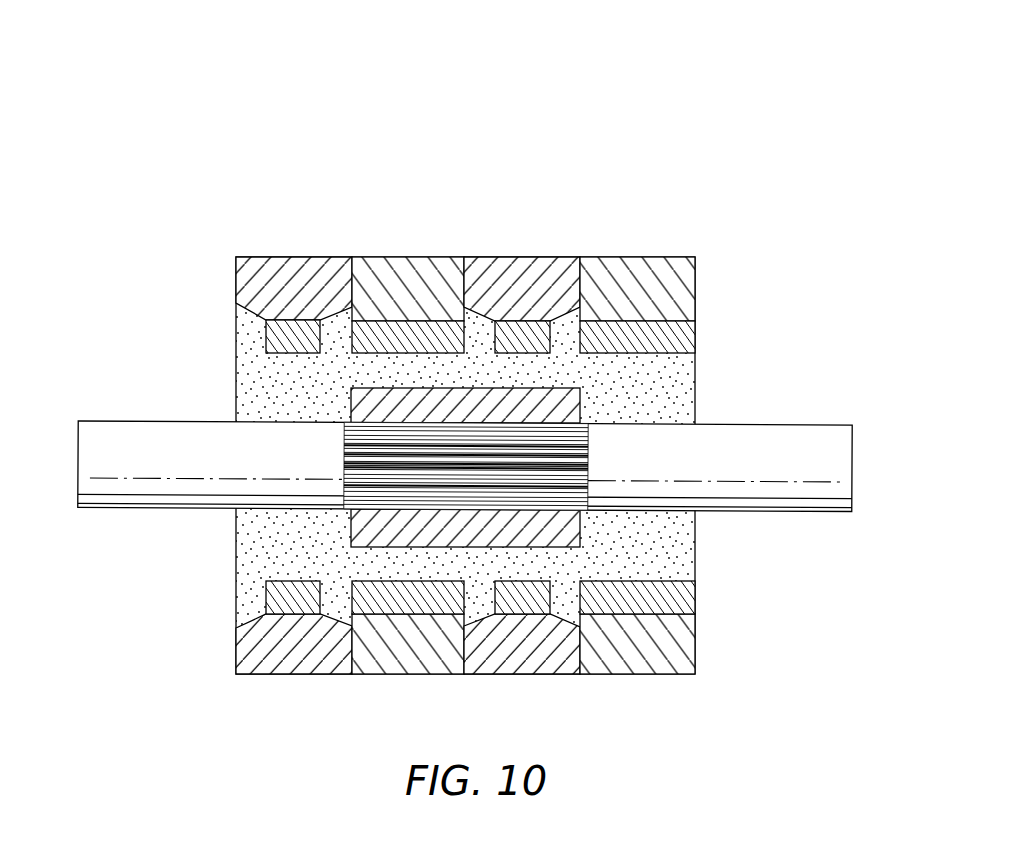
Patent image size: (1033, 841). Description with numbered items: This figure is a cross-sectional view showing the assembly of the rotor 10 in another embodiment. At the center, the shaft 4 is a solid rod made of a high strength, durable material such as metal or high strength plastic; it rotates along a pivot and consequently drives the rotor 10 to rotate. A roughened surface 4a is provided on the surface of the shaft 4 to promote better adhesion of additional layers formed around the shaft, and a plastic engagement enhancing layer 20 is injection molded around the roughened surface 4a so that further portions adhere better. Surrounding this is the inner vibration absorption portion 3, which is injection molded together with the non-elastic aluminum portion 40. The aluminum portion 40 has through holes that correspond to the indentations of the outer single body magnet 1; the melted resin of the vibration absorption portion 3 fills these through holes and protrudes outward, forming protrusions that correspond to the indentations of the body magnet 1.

The rotor 10 is at (313, 149).
The outer single body magnet 1 is at (630, 259).
The vibration absorption portion 3 is at (264, 553).
The shaft 4 is at (465, 433).
The roughened surface 4a is at (345, 431).
The plastic engagement enhancing layer 20 is at (562, 546).
The aluminum portion 40 is at (697, 600).